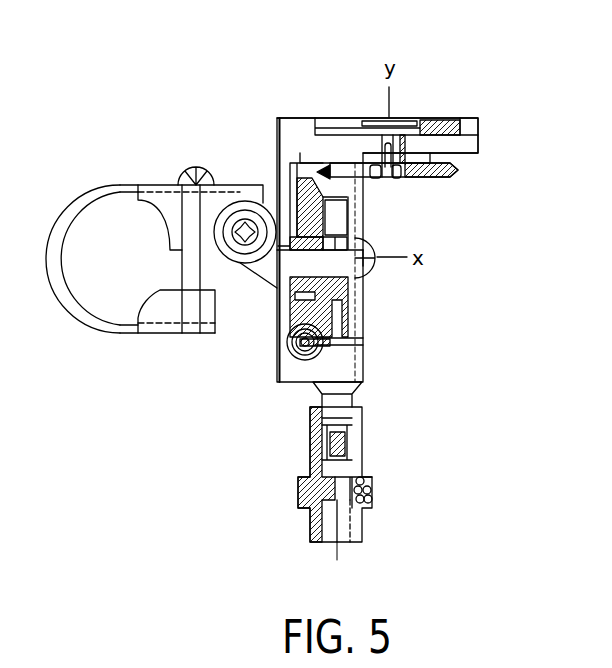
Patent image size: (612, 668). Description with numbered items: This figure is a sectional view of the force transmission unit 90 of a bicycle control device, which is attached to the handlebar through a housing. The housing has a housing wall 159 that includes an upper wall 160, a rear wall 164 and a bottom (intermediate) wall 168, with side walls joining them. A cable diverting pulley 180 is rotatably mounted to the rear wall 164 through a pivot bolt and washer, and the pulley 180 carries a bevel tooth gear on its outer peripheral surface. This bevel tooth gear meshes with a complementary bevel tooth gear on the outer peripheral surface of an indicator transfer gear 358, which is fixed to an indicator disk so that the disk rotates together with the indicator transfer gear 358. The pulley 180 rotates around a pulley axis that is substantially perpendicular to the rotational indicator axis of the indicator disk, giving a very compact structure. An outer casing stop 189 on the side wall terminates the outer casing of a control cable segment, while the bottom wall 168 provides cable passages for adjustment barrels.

The force transmission unit 90 is at (418, 95).
The upper wall 160 is at (478, 133).
The rear wall 164 is at (277, 137).
The indicator transfer gear 358 is at (425, 175).
The pulley 180 is at (347, 308).
The bottom (intermediate) wall 168 is at (365, 363).
The housing wall 159 is at (266, 336).
The outer casing stop 189 is at (286, 354).